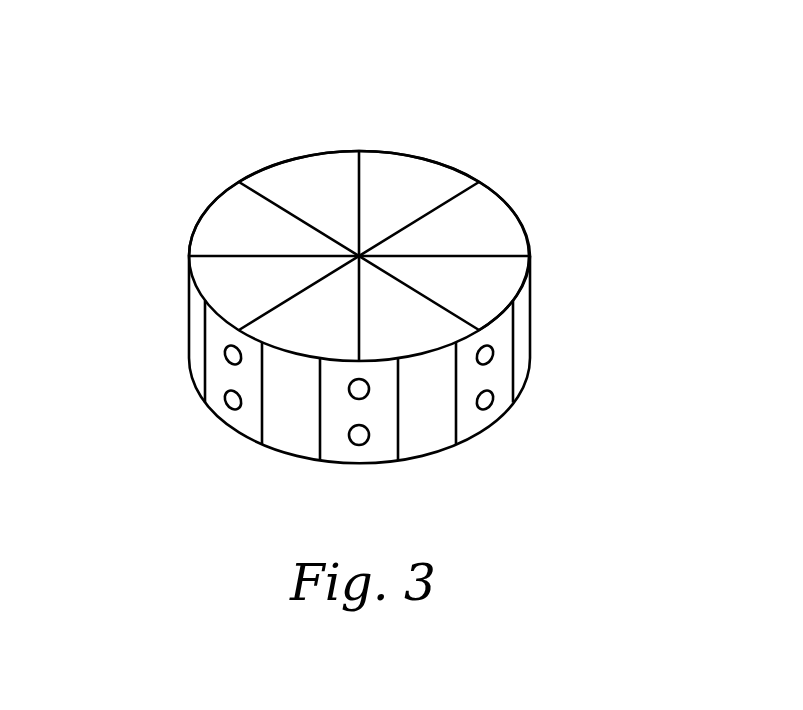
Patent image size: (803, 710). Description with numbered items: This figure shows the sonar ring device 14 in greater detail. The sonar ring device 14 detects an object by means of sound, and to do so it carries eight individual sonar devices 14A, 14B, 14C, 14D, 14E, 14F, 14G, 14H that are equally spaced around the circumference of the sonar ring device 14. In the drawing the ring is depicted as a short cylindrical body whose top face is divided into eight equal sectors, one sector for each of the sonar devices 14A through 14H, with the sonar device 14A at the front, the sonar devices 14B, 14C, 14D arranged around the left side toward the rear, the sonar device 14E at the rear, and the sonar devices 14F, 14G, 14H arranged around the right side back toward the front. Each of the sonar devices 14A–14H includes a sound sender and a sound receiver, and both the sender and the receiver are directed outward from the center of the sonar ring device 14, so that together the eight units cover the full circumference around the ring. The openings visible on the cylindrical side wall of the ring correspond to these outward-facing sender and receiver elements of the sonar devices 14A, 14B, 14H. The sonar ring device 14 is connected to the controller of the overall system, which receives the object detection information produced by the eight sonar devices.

The sonar ring device 14 is at (655, 140).
The sonar device 14A is at (345, 420).
The sonar device 14B is at (214, 334).
The sonar device 14C is at (168, 262).
The sonar device 14D is at (206, 181).
The sonar device 14E is at (348, 134).
The sonar device 14F is at (525, 174).
The sonar device 14G is at (555, 262).
The sonar device 14H is at (506, 334).